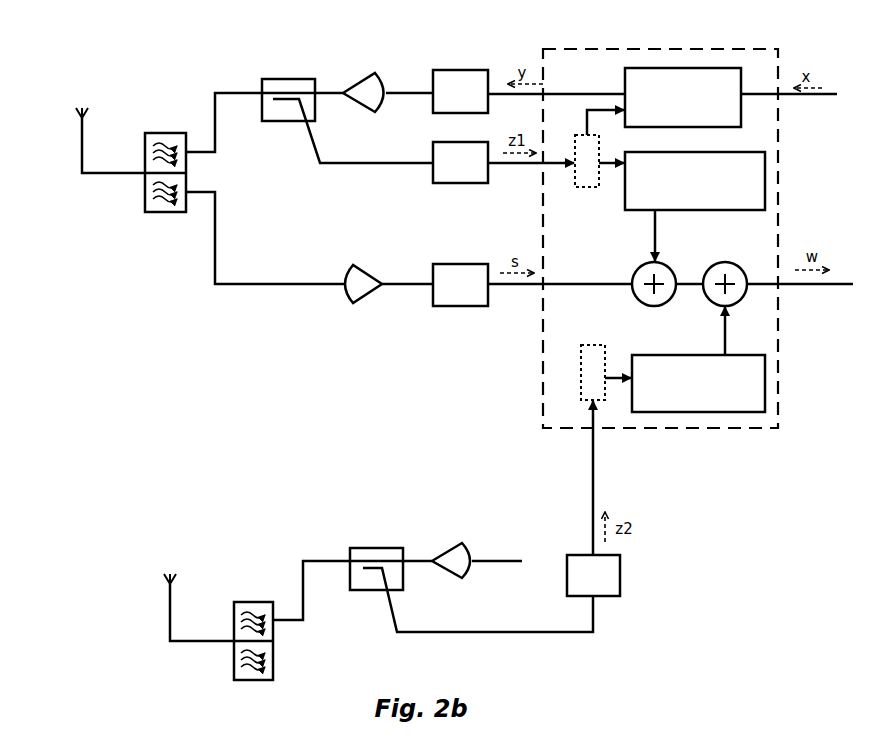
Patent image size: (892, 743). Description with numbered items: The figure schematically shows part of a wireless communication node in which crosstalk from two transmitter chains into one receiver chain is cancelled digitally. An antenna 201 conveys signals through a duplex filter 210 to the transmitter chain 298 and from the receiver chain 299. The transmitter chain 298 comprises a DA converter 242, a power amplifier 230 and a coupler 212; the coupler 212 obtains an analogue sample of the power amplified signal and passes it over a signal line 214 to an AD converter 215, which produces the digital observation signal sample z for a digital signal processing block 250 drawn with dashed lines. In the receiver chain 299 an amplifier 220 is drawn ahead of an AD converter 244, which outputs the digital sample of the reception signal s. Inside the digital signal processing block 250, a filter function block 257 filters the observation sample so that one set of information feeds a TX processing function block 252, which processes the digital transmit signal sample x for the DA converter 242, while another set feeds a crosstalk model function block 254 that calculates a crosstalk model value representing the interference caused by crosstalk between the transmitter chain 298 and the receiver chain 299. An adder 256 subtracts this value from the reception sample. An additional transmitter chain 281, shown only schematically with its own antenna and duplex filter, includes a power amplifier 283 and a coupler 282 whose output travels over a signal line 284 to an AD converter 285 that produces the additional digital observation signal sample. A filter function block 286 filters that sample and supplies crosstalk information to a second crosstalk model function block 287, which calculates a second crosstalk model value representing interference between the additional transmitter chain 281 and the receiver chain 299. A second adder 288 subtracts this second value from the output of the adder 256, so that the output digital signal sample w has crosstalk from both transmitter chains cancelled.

The antenna 201 is at (84, 108).
The duplex filter 210 is at (145, 206).
The coupler 212 is at (281, 79).
The signal line 214 is at (346, 164).
The AD converter 215 is at (461, 184).
The receive amplifier 220 is at (355, 305).
The power amplifier 230 is at (378, 74).
The DA converter 242 is at (455, 70).
The AD converter 244 is at (462, 307).
The digital signal processing block 250 is at (582, 49).
The TX processing function block 252 is at (662, 68).
The crosstalk model function block 254 is at (765, 157).
The adder 256 is at (641, 302).
The filter function block 257 is at (587, 188).
The additional transmitter chain 281 is at (258, 565).
The coupler 282 is at (369, 548).
The power amplifier 283 is at (463, 545).
The signal line 284 is at (434, 633).
The AD converter 285 is at (620, 578).
The filter function block 286 is at (581, 381).
The crosstalk model function block 287 is at (720, 412).
The adder 288 is at (709, 302).
The transmitter chain 298 is at (196, 100).
The receiver chain 299 is at (198, 278).